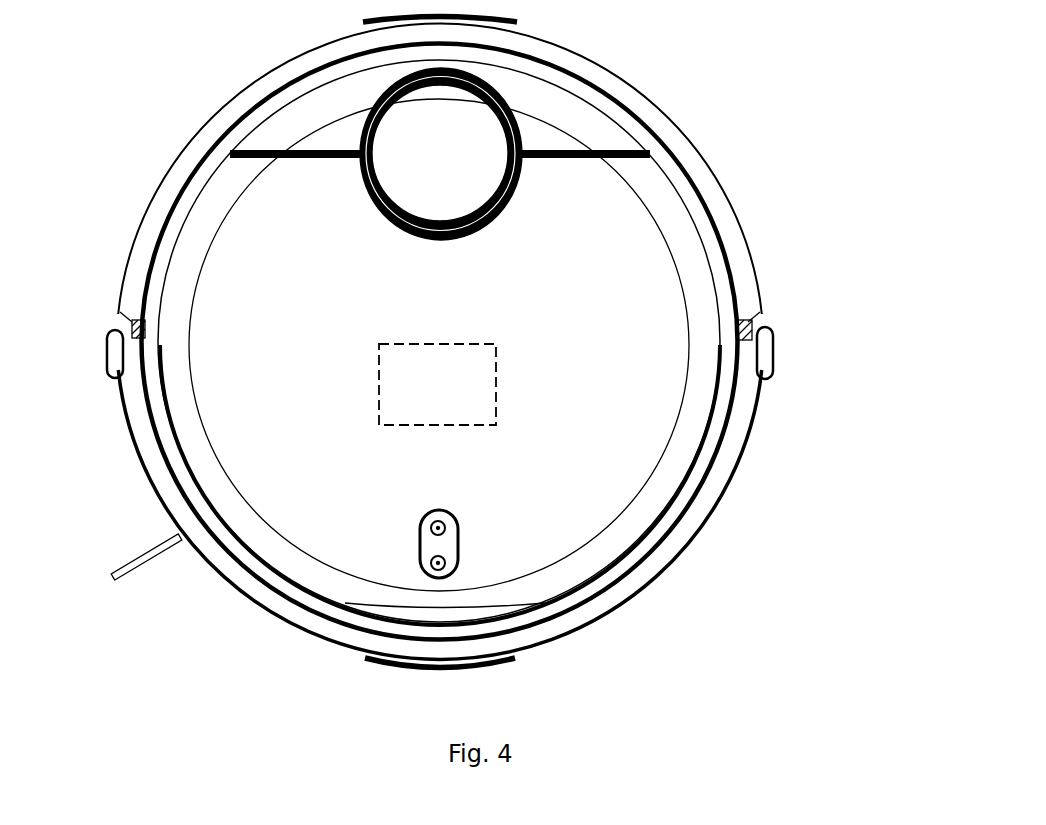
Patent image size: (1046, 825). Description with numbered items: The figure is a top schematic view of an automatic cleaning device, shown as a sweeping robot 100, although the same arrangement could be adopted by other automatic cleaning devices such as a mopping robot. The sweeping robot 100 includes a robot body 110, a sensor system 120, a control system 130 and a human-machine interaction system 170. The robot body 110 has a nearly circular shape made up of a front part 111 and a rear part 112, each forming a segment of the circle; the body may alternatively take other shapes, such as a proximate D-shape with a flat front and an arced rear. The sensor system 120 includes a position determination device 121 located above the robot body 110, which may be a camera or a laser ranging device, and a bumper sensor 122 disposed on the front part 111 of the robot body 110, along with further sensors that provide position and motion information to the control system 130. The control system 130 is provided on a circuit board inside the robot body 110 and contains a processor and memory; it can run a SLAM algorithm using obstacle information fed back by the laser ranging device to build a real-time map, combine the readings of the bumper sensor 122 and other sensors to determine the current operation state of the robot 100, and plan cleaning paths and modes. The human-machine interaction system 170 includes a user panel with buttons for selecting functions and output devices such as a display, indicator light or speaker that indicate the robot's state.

The sweeping robot 100 is at (717, 33).
The robot body 110 is at (645, 197).
The front part 111 is at (668, 505).
The rear part 112 is at (650, 118).
The sensor system 120 is at (665, 238).
The position determination device 121 is at (510, 202).
The bumper sensor 122 is at (760, 408).
The control system 130 is at (495, 425).
The human-machine interaction system 170 is at (420, 540).